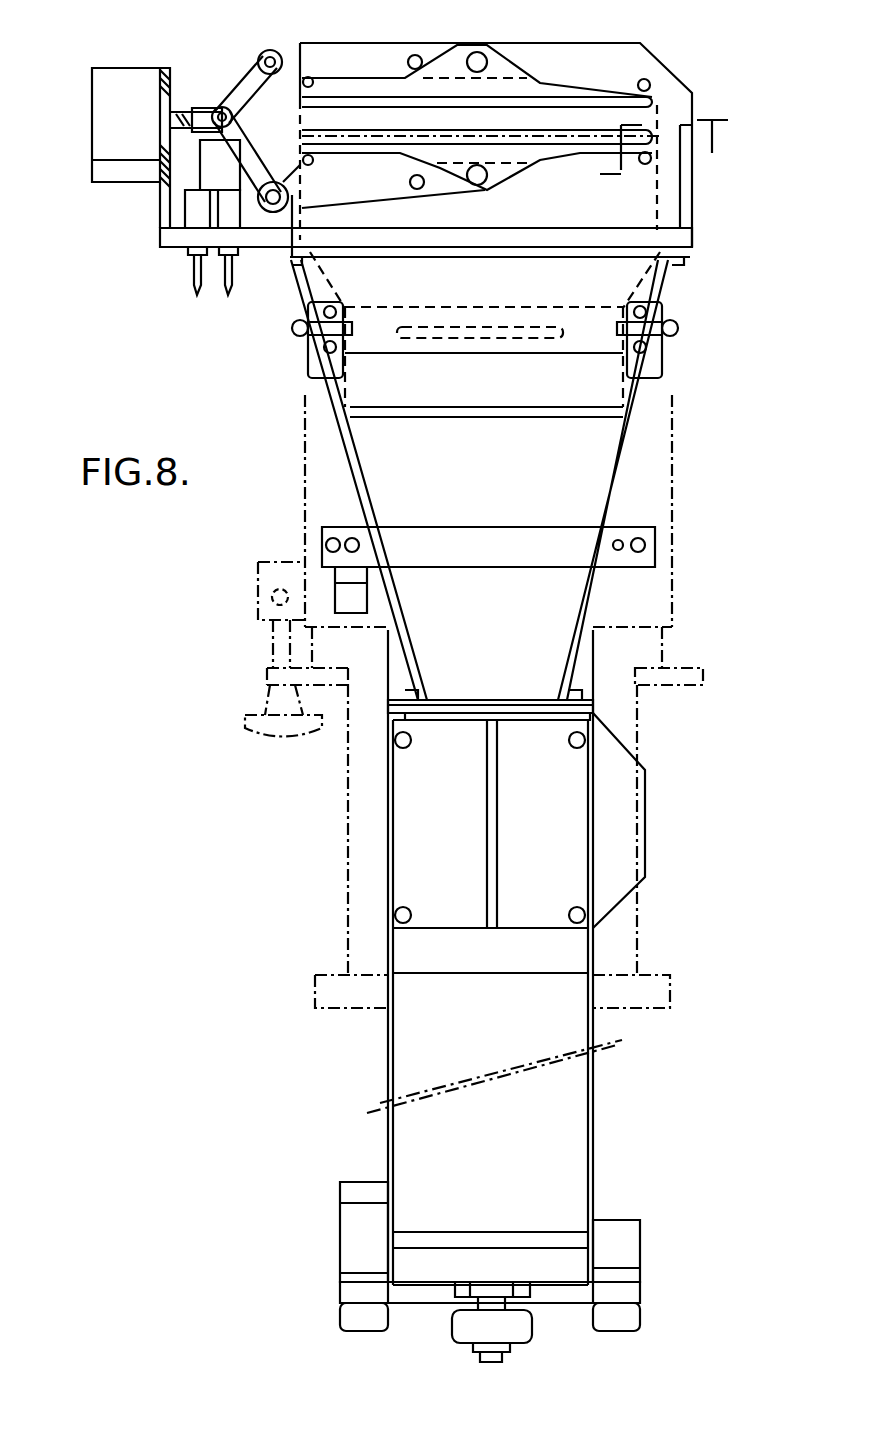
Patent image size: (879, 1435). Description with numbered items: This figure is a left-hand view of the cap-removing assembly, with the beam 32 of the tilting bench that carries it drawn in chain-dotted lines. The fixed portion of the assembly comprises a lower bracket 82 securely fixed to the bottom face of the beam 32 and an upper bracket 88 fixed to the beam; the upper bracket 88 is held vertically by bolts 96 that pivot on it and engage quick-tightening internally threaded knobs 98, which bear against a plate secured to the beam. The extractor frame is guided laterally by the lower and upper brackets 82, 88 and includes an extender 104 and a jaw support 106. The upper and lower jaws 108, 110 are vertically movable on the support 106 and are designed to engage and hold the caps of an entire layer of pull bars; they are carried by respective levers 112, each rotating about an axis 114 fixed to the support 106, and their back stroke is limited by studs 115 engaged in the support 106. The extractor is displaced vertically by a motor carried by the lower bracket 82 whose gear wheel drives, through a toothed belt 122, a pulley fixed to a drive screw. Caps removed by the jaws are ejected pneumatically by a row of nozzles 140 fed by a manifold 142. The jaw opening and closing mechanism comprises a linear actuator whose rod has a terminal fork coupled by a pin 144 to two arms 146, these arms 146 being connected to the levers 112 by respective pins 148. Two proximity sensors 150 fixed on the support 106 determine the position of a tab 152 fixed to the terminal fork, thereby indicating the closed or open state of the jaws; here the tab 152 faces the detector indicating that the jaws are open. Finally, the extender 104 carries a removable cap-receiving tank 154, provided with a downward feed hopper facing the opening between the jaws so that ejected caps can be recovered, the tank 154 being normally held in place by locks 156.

The beam 32 is at (348, 830).
The lower bracket 82 is at (418, 1038).
The upper bracket 88 is at (637, 486).
The bolts 96 is at (278, 636).
The quick-tightening internally threaded knobs 98 is at (285, 740).
The extender 104 is at (511, 506).
The jaw support 106 is at (588, 72).
The upper jaw 108 is at (590, 93).
The lower jaw 110 is at (648, 142).
The levers 112 is at (400, 180).
The axis 114 is at (425, 185).
The studs 115 is at (303, 80).
The toothed belt 122 is at (515, 1325).
The nozzles 140 is at (622, 545).
The manifold 142 is at (118, 140).
The pin 144 is at (216, 110).
The arms 146 is at (245, 97).
The pins 148 is at (265, 58).
The proximity sensors 150 is at (227, 205).
The tab 152 is at (160, 165).
The cap-receiving tank 154 is at (503, 394).
The locks 156 is at (320, 360).